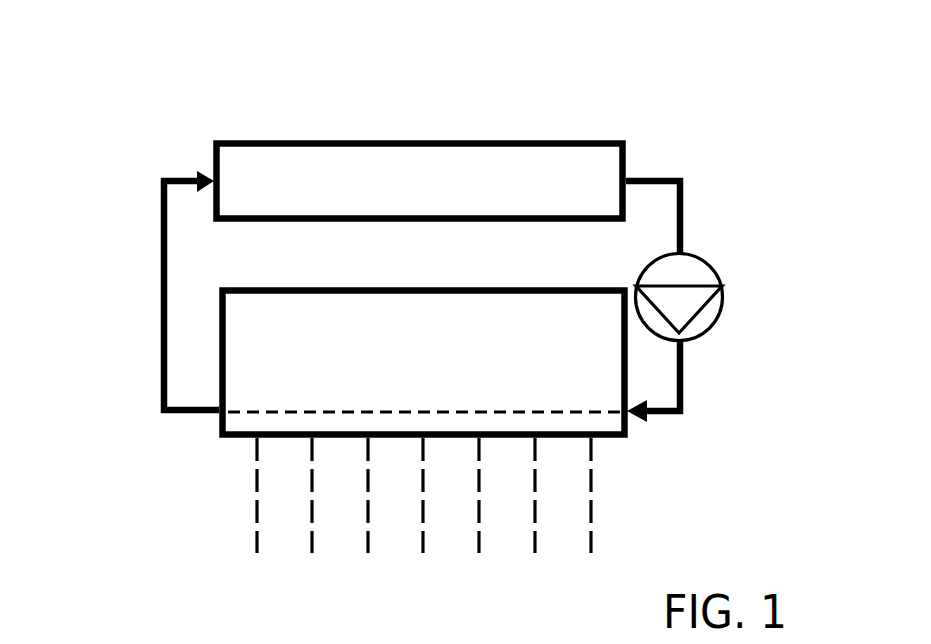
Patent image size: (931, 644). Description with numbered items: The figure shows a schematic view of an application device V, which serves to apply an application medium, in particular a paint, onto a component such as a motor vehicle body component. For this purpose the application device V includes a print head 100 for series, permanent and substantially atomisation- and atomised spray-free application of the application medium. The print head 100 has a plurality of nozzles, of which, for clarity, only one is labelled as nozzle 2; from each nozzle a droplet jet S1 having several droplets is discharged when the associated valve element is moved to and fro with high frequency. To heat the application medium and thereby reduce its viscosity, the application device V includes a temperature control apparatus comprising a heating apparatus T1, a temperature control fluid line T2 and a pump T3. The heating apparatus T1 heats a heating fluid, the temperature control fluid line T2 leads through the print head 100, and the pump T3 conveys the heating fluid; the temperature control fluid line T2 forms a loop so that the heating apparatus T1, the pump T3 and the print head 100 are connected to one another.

The print head 100 is at (448, 366).
The heating apparatus T1 is at (360, 140).
The temperature control fluid line T2 is at (228, 413).
The pump T3 is at (708, 276).
The droplet jet S1 is at (595, 485).
The nozzle 2 is at (312, 440).
The application device V is at (140, 153).